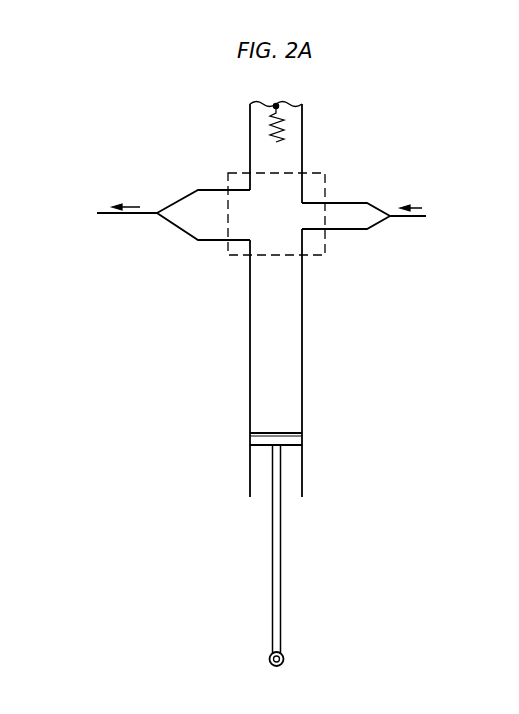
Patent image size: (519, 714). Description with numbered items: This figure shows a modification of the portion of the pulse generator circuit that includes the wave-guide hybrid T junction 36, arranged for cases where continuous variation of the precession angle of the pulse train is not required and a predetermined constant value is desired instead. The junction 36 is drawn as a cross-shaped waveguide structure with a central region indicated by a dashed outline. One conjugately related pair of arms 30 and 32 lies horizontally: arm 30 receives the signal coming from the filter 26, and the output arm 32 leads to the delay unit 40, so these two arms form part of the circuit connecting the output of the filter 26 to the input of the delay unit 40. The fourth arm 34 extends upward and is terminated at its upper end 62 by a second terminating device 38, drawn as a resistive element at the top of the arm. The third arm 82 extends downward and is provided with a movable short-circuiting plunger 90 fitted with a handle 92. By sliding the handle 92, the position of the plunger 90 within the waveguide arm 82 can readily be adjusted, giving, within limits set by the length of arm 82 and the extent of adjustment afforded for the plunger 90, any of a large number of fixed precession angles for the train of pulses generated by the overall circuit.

The filter 26 is at (434, 219).
The arm 30 is at (347, 203).
The arm 32 is at (207, 240).
The fourth arm 34 is at (302, 148).
The wave-guide hybrid T junction 36 is at (326, 248).
The second terminating device 38 is at (284, 124).
The delay unit 40 is at (96, 215).
The upper end 62 is at (276, 104).
The third arm 82 is at (302, 328).
The movable short-circuiting plunger 90 is at (290, 446).
The handle 92 is at (281, 594).